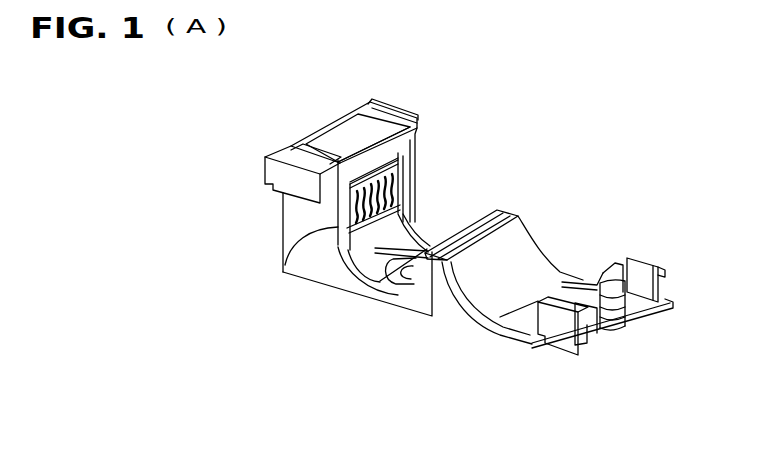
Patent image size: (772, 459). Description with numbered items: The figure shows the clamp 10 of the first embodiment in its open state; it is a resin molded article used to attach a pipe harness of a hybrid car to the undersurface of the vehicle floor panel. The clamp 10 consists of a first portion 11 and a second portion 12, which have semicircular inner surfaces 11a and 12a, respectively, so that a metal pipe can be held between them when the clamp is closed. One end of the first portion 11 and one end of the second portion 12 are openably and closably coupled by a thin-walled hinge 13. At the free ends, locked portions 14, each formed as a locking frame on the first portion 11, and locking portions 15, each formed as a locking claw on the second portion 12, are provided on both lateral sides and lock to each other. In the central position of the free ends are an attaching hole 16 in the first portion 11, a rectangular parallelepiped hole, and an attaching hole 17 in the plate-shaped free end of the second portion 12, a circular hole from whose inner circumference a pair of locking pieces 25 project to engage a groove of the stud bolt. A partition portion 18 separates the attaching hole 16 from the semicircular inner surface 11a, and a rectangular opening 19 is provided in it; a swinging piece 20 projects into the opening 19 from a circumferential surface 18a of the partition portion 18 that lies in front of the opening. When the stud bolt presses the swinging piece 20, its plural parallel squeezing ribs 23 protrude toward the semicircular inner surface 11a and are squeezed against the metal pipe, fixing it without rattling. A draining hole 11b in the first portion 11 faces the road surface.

The clamp 10 is at (240, 106).
The first portion 11 is at (352, 302).
The semicircular inner surface 11a is at (418, 225).
The draining hole 11b is at (382, 262).
The second portion 12 is at (490, 340).
The semicircular inner surface 12a is at (525, 268).
The thin-walled hinge 13 is at (495, 215).
The locked portion 14 is at (383, 102).
The locking portion 15 is at (553, 323).
The attaching hole 16 is at (343, 136).
The attaching hole 17 is at (610, 328).
The partition portion 18 is at (287, 270).
The circumferential surface 18a is at (360, 173).
The rectangular opening 19 is at (352, 270).
The swinging piece 20 is at (414, 190).
The squeezing ribs 23 is at (337, 205).
The locking pieces 25 is at (587, 327).